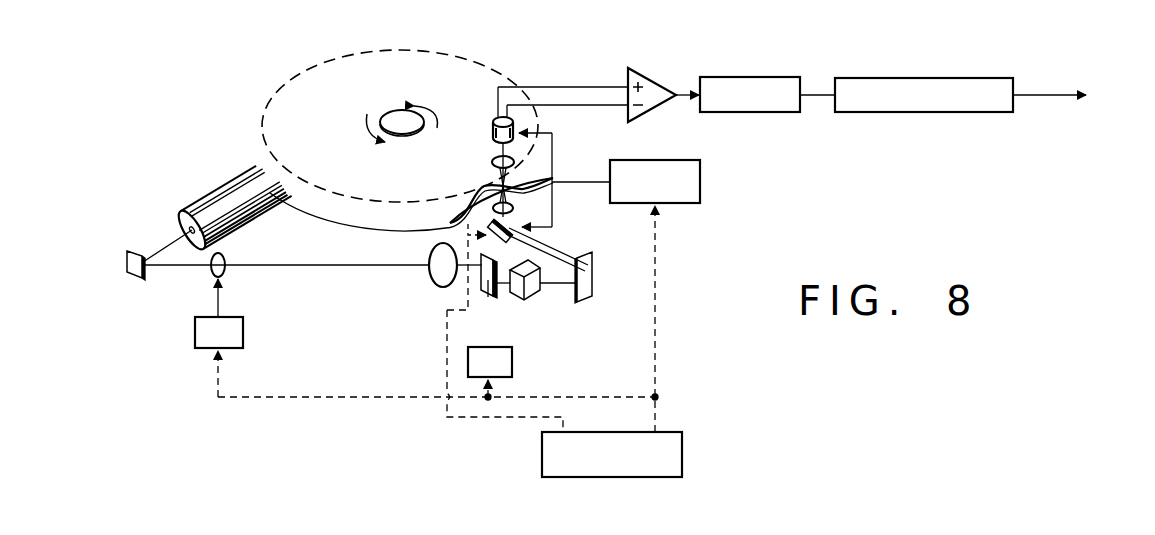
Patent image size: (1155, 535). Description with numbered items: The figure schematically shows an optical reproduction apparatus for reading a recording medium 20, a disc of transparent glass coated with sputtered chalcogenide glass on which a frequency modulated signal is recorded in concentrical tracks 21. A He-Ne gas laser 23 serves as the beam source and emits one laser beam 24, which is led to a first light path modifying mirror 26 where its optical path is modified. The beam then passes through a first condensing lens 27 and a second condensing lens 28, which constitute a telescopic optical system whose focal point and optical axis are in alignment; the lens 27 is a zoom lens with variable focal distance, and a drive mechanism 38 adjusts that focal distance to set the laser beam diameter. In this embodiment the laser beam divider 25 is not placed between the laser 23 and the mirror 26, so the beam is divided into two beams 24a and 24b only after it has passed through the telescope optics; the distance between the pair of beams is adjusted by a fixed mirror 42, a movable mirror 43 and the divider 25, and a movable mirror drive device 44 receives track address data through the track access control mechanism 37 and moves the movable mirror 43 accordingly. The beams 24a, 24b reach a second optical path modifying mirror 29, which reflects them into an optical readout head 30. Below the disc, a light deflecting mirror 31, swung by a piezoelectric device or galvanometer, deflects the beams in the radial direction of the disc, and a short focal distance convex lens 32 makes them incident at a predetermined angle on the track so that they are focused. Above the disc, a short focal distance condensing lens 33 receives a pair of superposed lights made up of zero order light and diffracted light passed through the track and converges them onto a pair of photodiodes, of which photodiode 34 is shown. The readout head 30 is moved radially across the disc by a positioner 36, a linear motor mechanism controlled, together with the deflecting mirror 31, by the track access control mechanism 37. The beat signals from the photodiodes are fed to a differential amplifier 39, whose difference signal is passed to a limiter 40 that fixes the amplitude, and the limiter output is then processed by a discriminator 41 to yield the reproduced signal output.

The recording medium 20 is at (316, 36).
The concentrical tracks 21 is at (286, 92).
The He-Ne gas laser 23 is at (218, 192).
The laser beam 24 is at (167, 246).
The laser beam 24a is at (530, 250).
The laser beam 24b is at (526, 231).
The laser beam divider 25 is at (536, 292).
The first light path modifying mirror 26 is at (124, 262).
The first condensing lens 27 is at (229, 258).
The second condensing lens 28 is at (430, 252).
The second optical path modifying mirror 29 is at (591, 278).
The optical readout head 30 is at (553, 204).
The light deflecting mirror 31 is at (489, 227).
The short focal distance convex lens 32 is at (513, 208).
The short focal distance condensing lens 33 is at (492, 162).
The photodiode 34 is at (493, 119).
The positioner 36 is at (701, 182).
The track access control mechanism 37 is at (612, 478).
The drive mechanism 38 is at (244, 330).
The differential amplifier 39 is at (656, 74).
The limiter 40 is at (747, 76).
The discriminator 41 is at (923, 77).
The fixed mirror 42 is at (483, 270).
The movable mirror 43 is at (492, 297).
The movable mirror drive device 44 is at (512, 358).